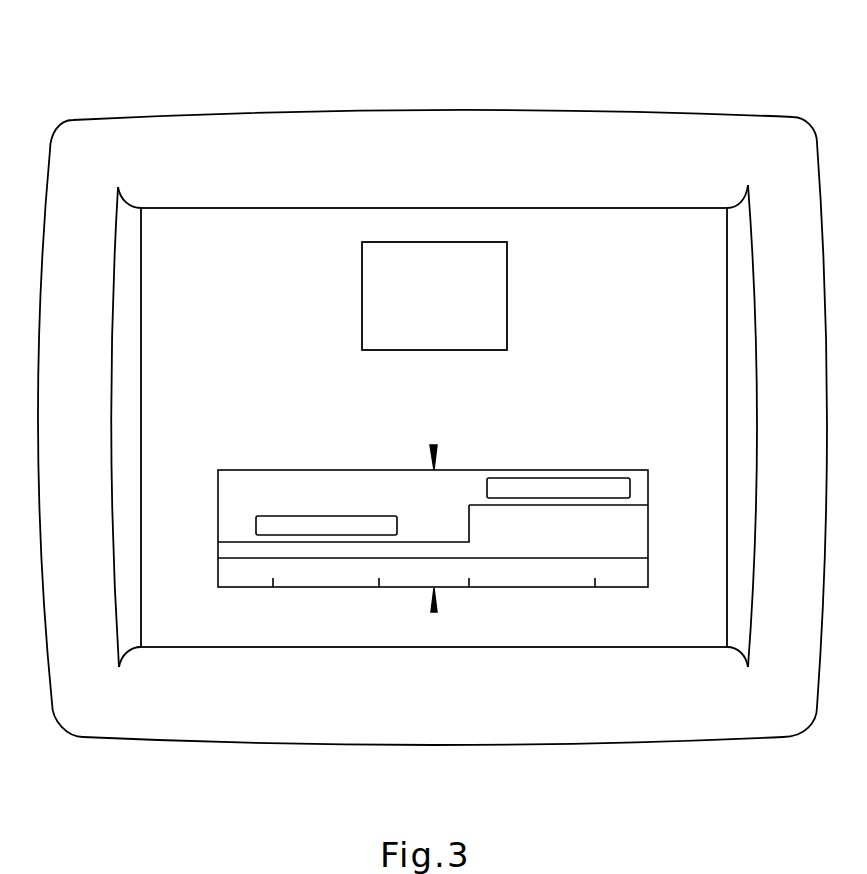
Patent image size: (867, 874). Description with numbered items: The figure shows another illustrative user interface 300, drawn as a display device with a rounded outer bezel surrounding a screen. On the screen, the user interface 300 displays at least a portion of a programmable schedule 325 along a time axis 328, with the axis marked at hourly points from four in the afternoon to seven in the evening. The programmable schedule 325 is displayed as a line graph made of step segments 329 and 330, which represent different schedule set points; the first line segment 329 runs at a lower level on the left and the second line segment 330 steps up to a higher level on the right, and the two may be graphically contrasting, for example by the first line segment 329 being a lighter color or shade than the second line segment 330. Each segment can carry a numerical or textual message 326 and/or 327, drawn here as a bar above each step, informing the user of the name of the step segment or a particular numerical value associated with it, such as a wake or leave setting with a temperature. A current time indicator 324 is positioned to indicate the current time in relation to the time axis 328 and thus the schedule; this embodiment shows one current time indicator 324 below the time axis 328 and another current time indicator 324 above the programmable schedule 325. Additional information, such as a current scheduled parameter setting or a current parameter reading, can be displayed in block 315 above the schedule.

The user interface 300 is at (719, 86).
The block 315 is at (411, 311).
The current time indicator 324 is at (431, 451).
The programmable schedule 325 is at (454, 457).
The message 326 is at (333, 522).
The message 327 is at (625, 485).
The time axis 328 is at (303, 587).
The first line segment 329 is at (230, 540).
The second line segment 330 is at (615, 506).